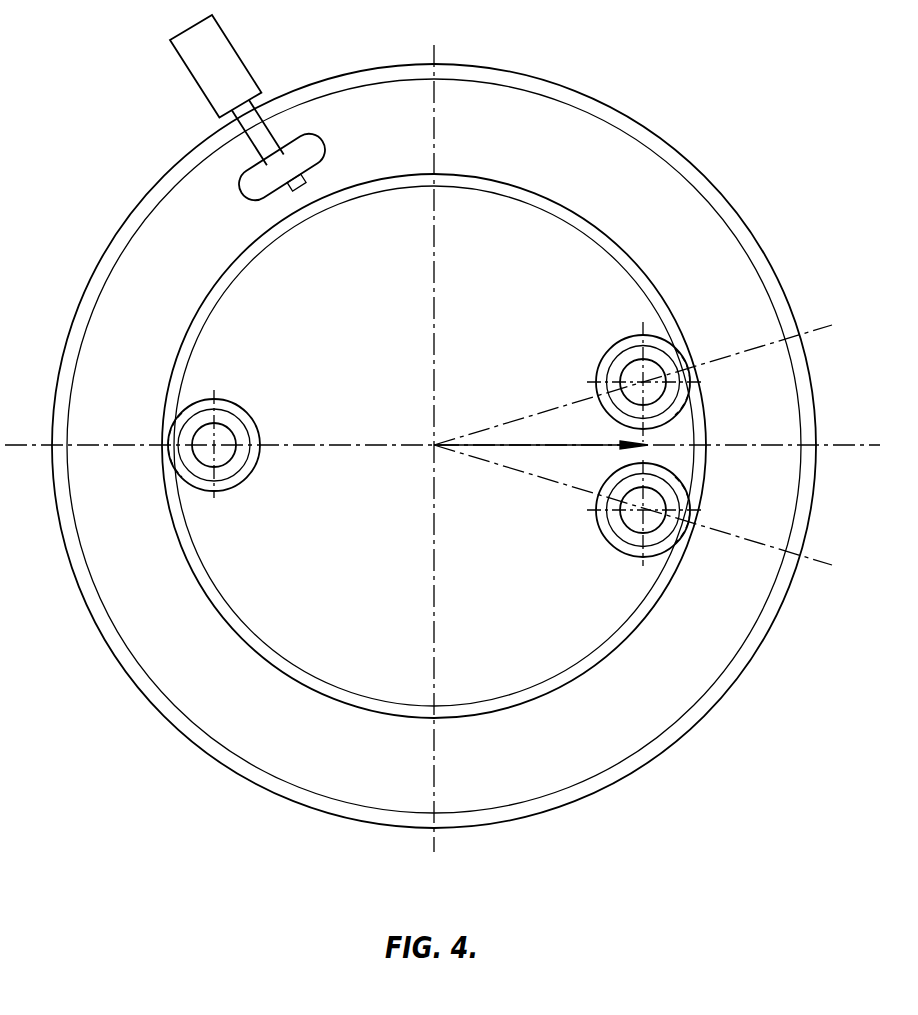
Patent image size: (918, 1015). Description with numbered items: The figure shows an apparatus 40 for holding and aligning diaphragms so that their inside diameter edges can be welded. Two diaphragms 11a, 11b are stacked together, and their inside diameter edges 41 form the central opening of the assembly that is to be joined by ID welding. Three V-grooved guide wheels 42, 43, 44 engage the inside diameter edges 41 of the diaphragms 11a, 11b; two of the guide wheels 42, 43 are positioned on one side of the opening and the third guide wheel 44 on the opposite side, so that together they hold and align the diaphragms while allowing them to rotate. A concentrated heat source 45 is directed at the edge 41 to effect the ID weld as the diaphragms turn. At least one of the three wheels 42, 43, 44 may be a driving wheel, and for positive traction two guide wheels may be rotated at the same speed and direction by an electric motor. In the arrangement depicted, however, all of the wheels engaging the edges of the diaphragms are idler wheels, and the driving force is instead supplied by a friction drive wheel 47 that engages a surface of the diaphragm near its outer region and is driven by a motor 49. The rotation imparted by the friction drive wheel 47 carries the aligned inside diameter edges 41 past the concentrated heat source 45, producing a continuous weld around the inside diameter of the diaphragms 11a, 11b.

The apparatus 40 is at (122, 156).
The diaphragm 11a is at (669, 203).
The diaphragm 11b is at (434, 446).
The inside diameter edge 41 is at (543, 201).
The V-grooved guide wheel 42 is at (660, 348).
The V-grooved guide wheel 43 is at (668, 540).
The V-grooved guide wheel 44 is at (200, 420).
The concentrated heat source 45 is at (582, 445).
The friction drive wheel 47 is at (307, 137).
The motor 49 is at (230, 55).